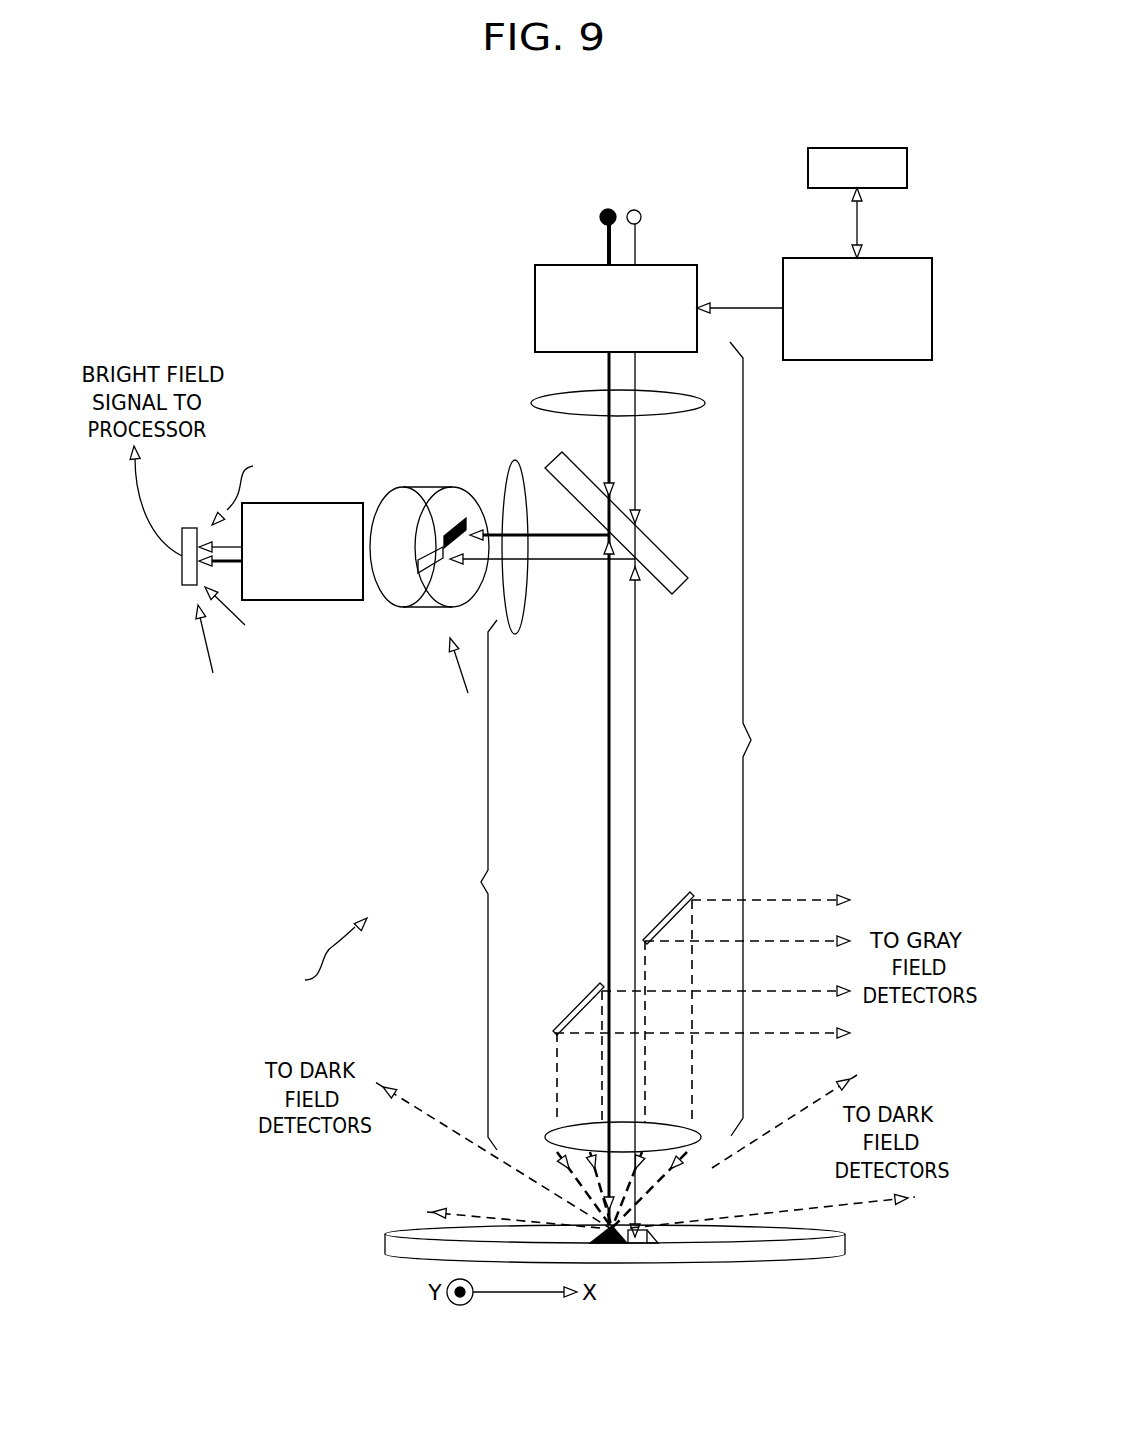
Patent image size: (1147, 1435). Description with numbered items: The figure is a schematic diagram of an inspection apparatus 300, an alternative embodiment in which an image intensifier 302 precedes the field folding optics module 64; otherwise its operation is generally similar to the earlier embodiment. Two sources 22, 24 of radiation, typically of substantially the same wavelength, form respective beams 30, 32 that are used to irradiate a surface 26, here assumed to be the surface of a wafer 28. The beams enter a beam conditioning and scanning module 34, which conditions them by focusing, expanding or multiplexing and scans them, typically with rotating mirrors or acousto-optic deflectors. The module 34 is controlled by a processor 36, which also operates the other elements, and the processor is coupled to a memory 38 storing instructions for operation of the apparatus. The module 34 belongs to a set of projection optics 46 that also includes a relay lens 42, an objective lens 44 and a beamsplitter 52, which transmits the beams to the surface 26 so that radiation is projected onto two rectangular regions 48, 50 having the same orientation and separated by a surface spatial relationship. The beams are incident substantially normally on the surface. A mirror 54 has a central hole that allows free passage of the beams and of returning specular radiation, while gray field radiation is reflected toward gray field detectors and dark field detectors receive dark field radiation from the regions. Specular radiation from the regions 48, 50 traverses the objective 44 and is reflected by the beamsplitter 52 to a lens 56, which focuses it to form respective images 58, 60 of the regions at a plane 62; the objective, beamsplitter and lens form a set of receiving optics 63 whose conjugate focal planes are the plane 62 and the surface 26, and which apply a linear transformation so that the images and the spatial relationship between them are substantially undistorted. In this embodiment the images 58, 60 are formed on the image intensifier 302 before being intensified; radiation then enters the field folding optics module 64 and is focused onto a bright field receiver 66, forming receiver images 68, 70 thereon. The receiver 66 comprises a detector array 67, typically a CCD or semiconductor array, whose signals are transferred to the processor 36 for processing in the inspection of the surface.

The source of radiation 22 is at (600, 216).
The source of radiation 24 is at (641, 216).
The beam 30 is at (607, 243).
The beam 32 is at (638, 243).
The beam conditioning and scanning module 34 is at (535, 304).
The processor 36 is at (783, 270).
The memory 38 is at (808, 170).
The relay lens 42 is at (690, 412).
The beamsplitter 52 is at (673, 558).
The projection optics 46 is at (756, 739).
The lens 56 is at (527, 602).
The image intensifier 302 is at (382, 587).
The image 60 is at (453, 518).
The image 58 is at (438, 605).
The field folding optics module 64 is at (318, 503).
The bright field receiver 66 is at (182, 562).
The receiver image 68 is at (245, 488).
The receiver image 70 is at (233, 621).
The detector array 67 is at (211, 652).
The plane 62 is at (466, 679).
The receiving optics 63 is at (470, 885).
The mirror 54 is at (579, 996).
The objective lens 44 is at (700, 1133).
The wafer 28 is at (763, 1255).
The surface 26 is at (515, 1232).
The region 48 is at (611, 1248).
The region 50 is at (650, 1240).
The inspection apparatus 300 is at (313, 954).